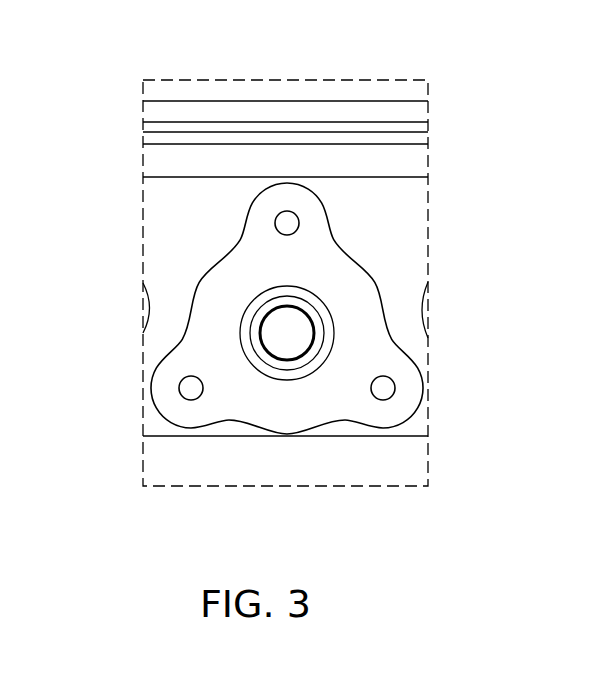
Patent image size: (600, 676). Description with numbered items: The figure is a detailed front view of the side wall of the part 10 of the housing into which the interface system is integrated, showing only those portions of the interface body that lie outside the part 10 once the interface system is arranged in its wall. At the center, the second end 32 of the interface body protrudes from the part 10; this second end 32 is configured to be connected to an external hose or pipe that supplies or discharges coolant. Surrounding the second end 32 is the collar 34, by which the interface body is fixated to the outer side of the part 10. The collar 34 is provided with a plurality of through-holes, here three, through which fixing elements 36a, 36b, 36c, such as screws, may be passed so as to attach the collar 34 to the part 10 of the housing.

The part of the housing 10 is at (166, 242).
The second end 32 is at (280, 373).
The collar 34 is at (348, 290).
The fixing element 36a is at (395, 388).
The fixing element 36b is at (287, 211).
The fixing element 36c is at (179, 388).